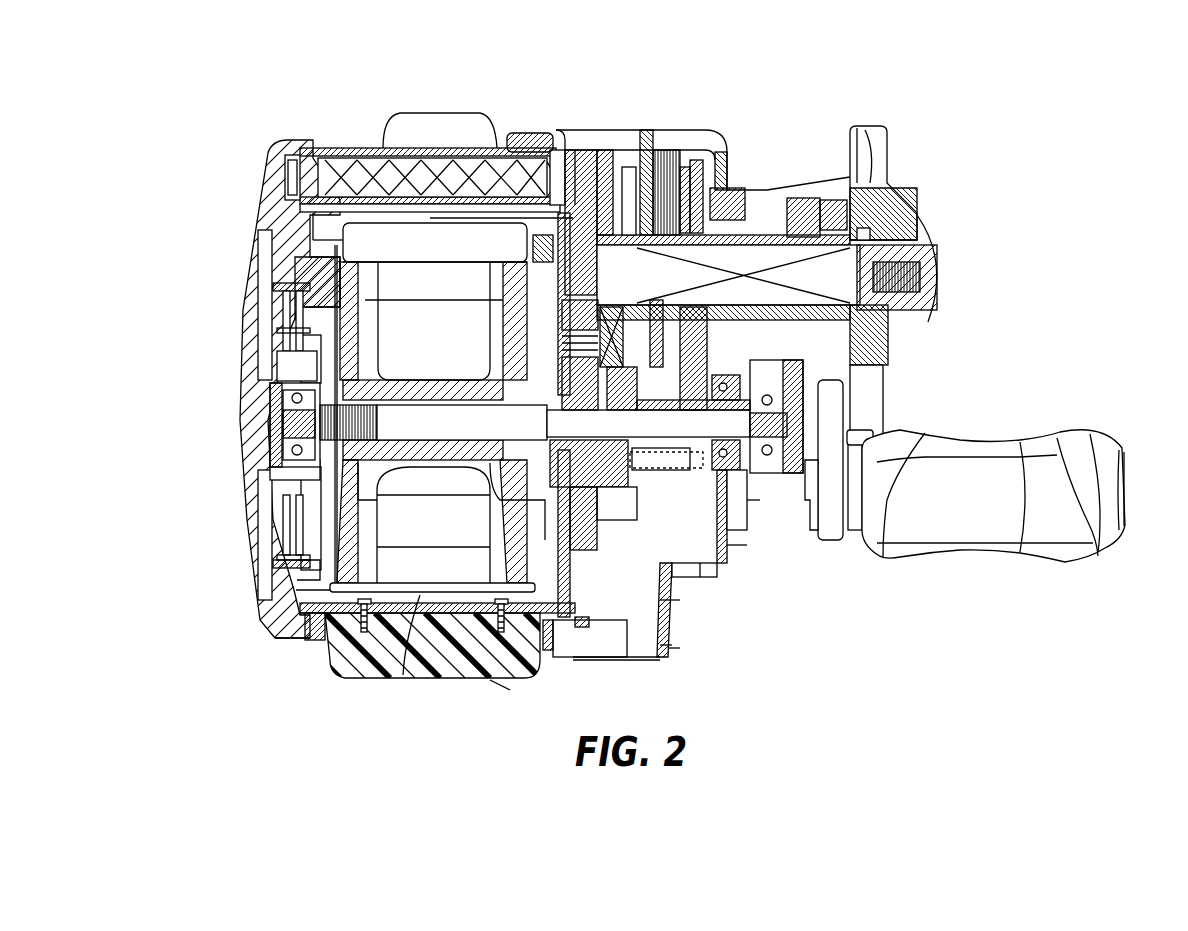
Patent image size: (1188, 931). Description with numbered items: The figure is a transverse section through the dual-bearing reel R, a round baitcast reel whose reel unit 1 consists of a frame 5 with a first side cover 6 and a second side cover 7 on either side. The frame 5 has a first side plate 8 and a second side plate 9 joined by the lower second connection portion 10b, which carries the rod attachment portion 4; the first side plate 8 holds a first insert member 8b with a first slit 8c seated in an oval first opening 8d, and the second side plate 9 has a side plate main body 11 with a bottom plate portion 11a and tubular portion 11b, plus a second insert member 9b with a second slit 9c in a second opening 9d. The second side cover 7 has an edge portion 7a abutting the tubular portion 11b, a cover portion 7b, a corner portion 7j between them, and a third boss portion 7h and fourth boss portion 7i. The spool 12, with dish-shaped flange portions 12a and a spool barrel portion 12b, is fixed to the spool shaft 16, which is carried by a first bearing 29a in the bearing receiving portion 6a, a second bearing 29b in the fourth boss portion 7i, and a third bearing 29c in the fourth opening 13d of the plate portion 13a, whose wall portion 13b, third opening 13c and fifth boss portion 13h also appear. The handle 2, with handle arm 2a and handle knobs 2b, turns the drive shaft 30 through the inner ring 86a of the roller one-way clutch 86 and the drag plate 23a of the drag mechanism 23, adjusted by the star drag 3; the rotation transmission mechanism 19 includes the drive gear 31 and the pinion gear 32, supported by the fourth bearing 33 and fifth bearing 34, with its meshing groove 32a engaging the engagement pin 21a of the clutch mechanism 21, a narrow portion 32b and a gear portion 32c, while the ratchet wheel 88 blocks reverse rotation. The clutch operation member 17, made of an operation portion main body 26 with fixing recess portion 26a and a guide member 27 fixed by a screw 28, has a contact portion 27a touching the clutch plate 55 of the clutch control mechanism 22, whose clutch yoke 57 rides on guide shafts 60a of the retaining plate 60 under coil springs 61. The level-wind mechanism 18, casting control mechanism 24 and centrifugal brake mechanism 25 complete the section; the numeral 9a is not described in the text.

The reel unit 1 is at (670, 670).
The handle 2 is at (968, 567).
The handle arm 2a is at (833, 537).
The handle knobs 2b is at (1027, 527).
The star drag 3 is at (885, 160).
The rod attachment portion 4 is at (390, 585).
The frame 5 is at (557, 133).
The first side cover 6 is at (250, 245).
The bearing receiving portion 6a is at (293, 470).
The second side cover 7 is at (745, 128).
The edge portion 7a is at (667, 663).
The cover portion 7b is at (655, 655).
The third boss portion 7h is at (770, 192).
The fourth boss portion 7i is at (890, 362).
The corner portion 7j is at (668, 648).
The first side plate 8 is at (304, 137).
The first insert member 8b is at (300, 598).
The first slit 8c is at (295, 620).
The first opening 8d is at (297, 573).
The second side plate 9 is at (598, 123).
The upper portion of mounting plate 9a is at (507, 293).
The second insert member 9b is at (545, 650).
The second slit 9c is at (560, 637).
The second opening 9d is at (585, 662).
The second connection portion 10b is at (330, 640).
The side plate main body 11 is at (590, 124).
The bottom plate portion 11a is at (480, 603).
The tubular portion 11b is at (595, 655).
The spool 12 is at (332, 290).
The flange portions 12a is at (433, 380).
The spool barrel portion 12b is at (513, 303).
The plate portion 13a is at (500, 280).
The wall portion 13b is at (574, 130).
The third opening 13c is at (517, 290).
The fourth opening 13d is at (440, 327).
The fifth boss portion 13h is at (470, 337).
The spool shaft 16 is at (420, 415).
The clutch operation member 17 is at (490, 680).
The level-wind mechanism 18 is at (364, 143).
The rotation transmission mechanism 19 is at (670, 137).
The clutch mechanism 21 is at (513, 520).
The engagement pin 21a is at (525, 555).
The clutch control mechanism 22 is at (640, 515).
The drag mechanism 23 is at (738, 176).
The drag plate 23a is at (733, 140).
The casting control mechanism 24 is at (863, 467).
The centrifugal brake mechanism 25 is at (270, 320).
The operation portion main body 26 is at (323, 677).
The fixing recess portion 26a is at (423, 620).
The guide member 27 is at (520, 620).
The contact portion 27a is at (658, 645).
The screw 28 is at (363, 637).
The first bearing 29a is at (285, 383).
The second bearing 29b is at (808, 400).
The third bearing 29c is at (527, 490).
The drive shaft 30 is at (905, 232).
The drive gear 31 is at (642, 152).
The pinion gear 32 is at (760, 493).
The meshing groove 32a is at (445, 480).
The narrow portion 32b is at (718, 548).
The gear portion 32c is at (705, 505).
The fourth bearing 33 is at (500, 360).
The fifth bearing 34 is at (833, 520).
The clutch plate 55 is at (660, 625).
The clutch yoke 57 is at (620, 525).
The retaining plate 60 is at (590, 520).
The guide shafts 60a is at (757, 542).
The coil springs 61 is at (740, 545).
The roller one-way clutch 86 is at (937, 309).
The inner ring 86a is at (853, 185).
The ratchet wheel 88 is at (630, 170).
The dual-bearing reel R is at (988, 167).